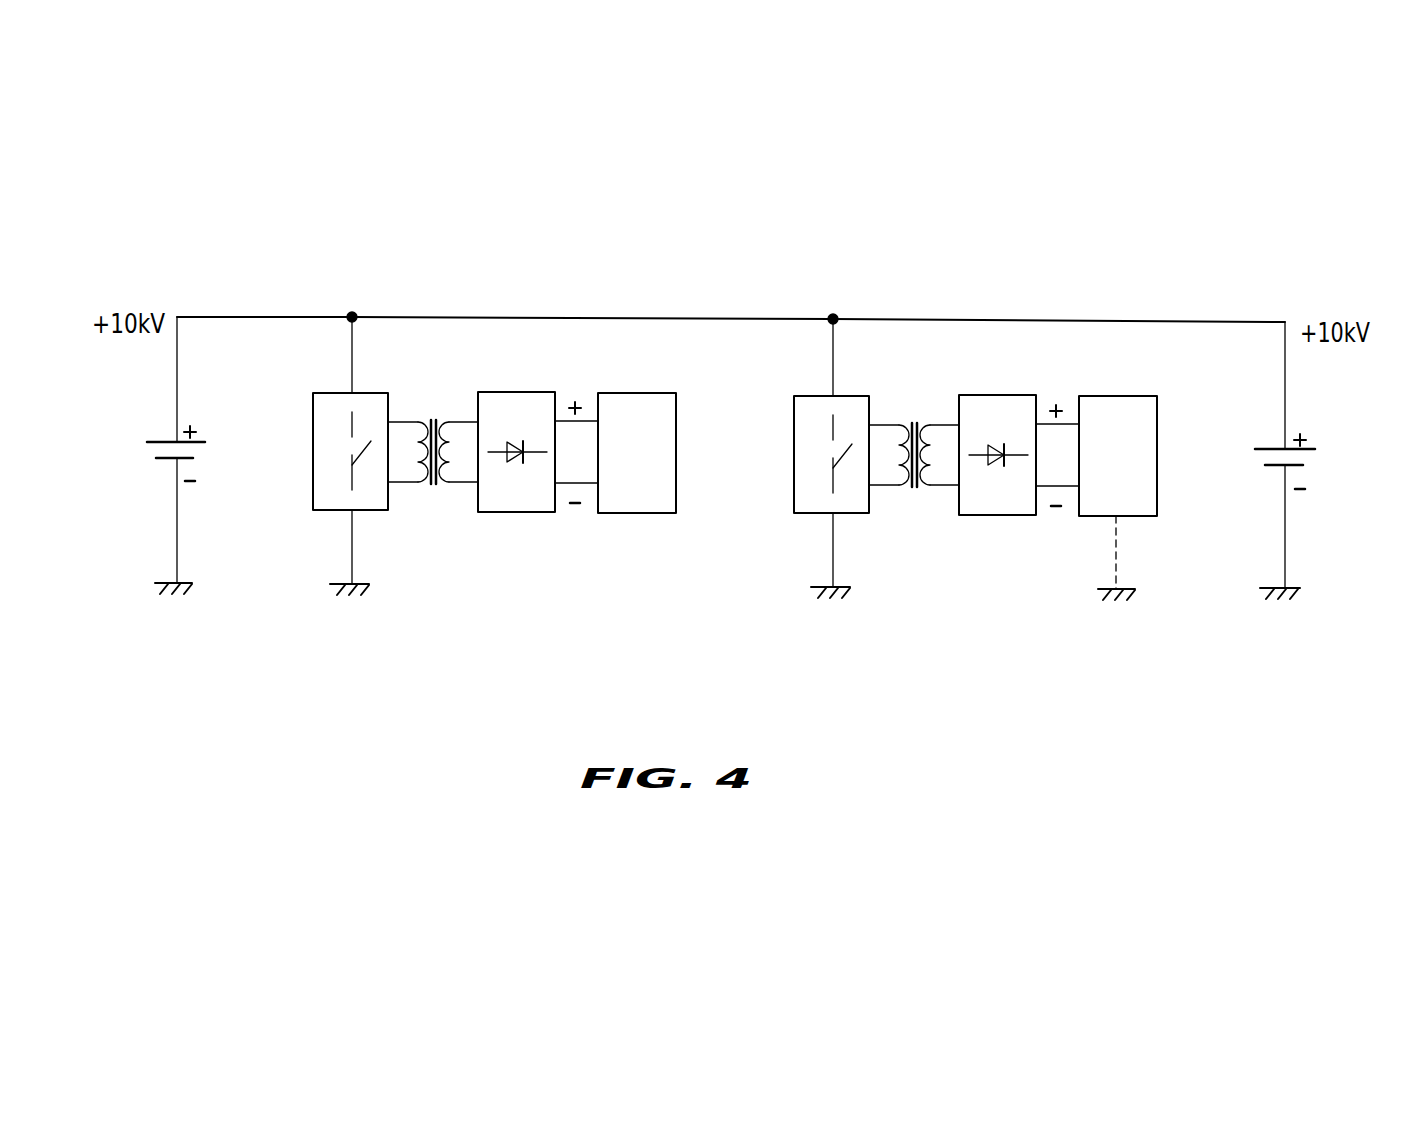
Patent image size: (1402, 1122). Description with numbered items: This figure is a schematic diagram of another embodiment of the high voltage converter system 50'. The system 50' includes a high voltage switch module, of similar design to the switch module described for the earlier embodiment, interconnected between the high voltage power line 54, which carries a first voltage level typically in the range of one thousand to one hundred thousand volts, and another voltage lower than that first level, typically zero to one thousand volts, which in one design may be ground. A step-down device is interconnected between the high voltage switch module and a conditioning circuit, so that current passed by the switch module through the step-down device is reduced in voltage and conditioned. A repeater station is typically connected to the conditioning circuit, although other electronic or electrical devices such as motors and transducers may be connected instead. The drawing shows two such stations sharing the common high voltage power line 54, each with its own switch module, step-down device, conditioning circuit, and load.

The high voltage converter system 50' is at (713, 227).
The high voltage power line 54 is at (886, 318).